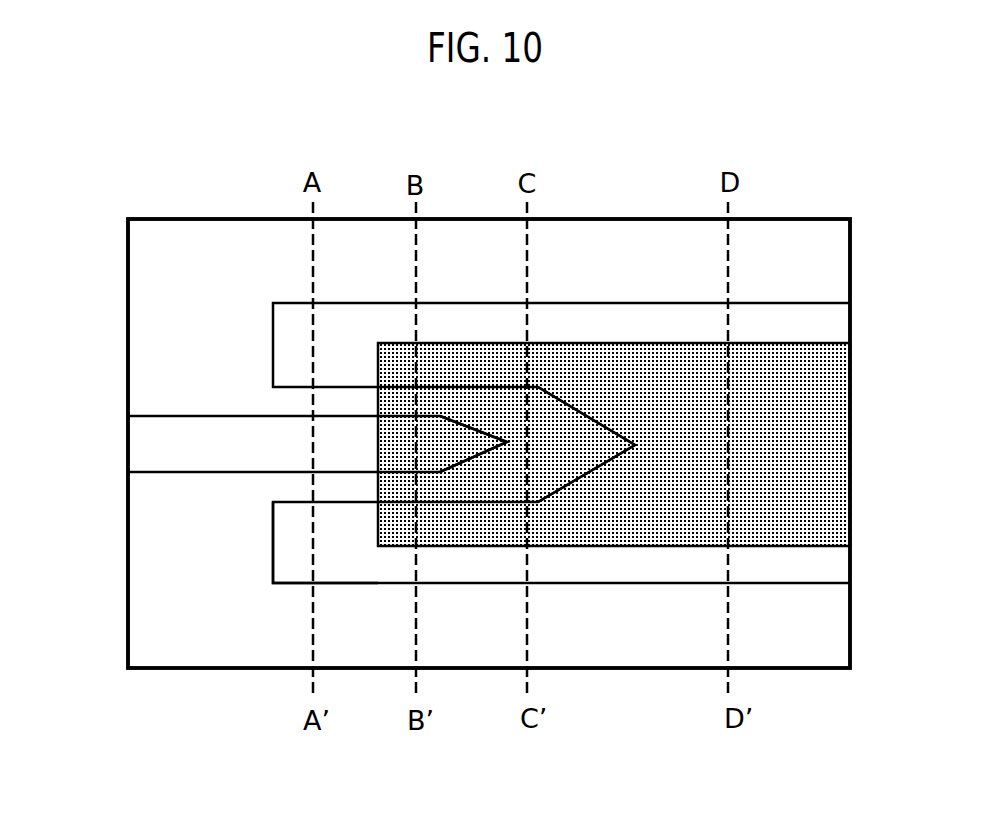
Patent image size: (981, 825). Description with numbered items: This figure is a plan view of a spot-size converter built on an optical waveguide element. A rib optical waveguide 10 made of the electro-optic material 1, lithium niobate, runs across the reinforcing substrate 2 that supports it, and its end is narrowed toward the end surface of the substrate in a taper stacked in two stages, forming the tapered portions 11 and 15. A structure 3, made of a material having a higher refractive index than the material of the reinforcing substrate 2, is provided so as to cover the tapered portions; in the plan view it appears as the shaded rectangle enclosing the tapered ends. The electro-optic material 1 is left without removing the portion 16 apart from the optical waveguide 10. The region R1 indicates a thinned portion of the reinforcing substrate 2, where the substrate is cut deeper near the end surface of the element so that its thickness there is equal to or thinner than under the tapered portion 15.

The material having an electro-optic effect 1 is at (183, 623).
The reinforcing substrate 2 is at (822, 567).
The structure 3 is at (822, 486).
The rib optical waveguide 10 is at (148, 444).
The tapered portion 11 is at (475, 460).
The tapered portion 15 is at (583, 415).
The portion apart from the optical waveguide 16 is at (817, 247).
The shaded portion R1 is at (340, 540).